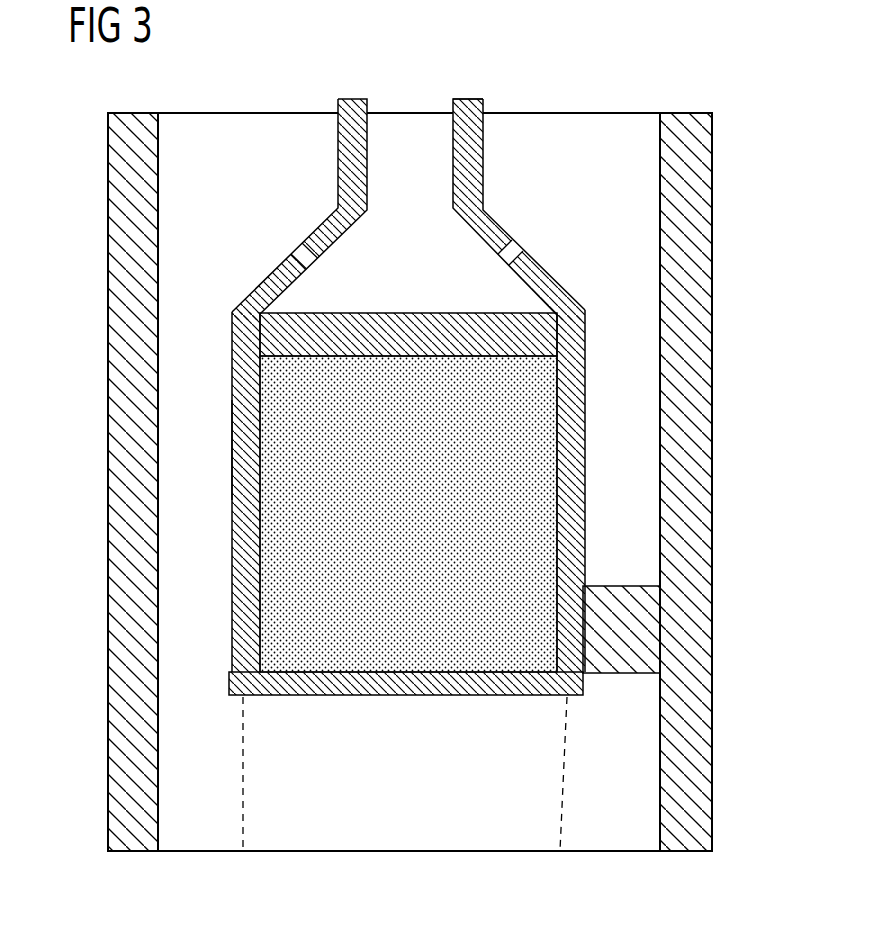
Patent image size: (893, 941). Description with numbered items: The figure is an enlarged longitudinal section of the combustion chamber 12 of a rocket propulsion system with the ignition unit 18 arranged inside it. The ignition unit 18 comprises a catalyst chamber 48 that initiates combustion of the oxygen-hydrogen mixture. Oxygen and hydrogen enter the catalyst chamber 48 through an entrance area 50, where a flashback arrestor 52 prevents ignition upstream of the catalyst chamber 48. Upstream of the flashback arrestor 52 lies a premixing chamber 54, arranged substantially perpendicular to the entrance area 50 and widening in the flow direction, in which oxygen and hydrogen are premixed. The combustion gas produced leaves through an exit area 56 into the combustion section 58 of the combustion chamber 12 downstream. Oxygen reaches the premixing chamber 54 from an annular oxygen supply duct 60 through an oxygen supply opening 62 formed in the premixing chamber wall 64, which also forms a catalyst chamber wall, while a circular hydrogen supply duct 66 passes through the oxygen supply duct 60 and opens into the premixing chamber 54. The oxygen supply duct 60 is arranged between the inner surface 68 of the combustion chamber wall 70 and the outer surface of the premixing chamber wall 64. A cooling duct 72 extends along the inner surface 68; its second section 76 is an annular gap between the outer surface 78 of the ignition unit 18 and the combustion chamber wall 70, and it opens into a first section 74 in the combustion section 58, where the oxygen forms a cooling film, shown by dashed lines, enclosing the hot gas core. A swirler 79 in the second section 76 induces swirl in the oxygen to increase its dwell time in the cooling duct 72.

The combustion chamber 12 is at (712, 329).
The ignition unit 18 is at (421, 462).
The catalyst chamber 48 is at (545, 430).
The entrance area 50 is at (378, 312).
The flashback arrestor 52 is at (232, 330).
The premixing chamber 54 is at (460, 264).
The exit area 56 is at (328, 698).
The combustion section 58 is at (480, 834).
The oxygen supply duct 60 is at (575, 128).
The oxygen supply opening 62 is at (302, 247).
The premixing chamber wall 64 is at (463, 99).
The hydrogen supply duct 66 is at (413, 128).
The inner surface 68 is at (160, 168).
The combustion chamber wall 70 is at (125, 162).
The cooling duct 72 is at (204, 702).
The first section 74 is at (187, 737).
The second section 76 is at (172, 540).
The outer surface 78 is at (232, 447).
The swirler 79 is at (616, 676).